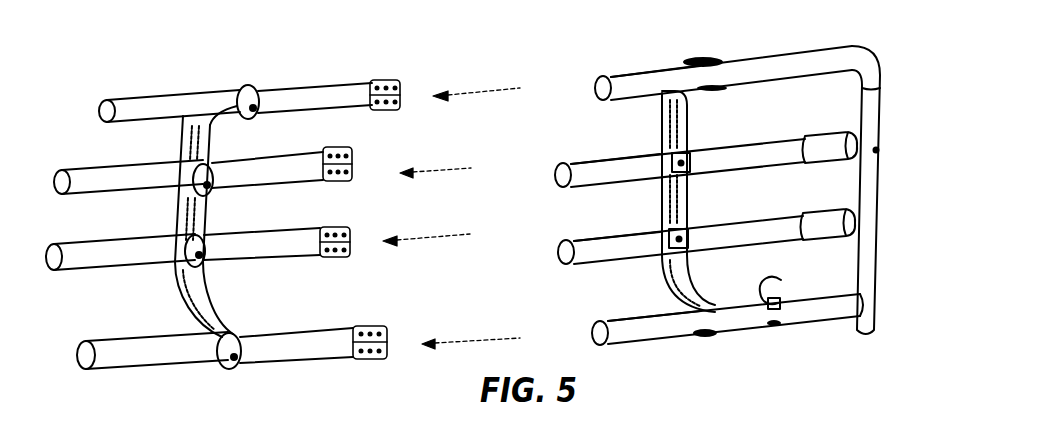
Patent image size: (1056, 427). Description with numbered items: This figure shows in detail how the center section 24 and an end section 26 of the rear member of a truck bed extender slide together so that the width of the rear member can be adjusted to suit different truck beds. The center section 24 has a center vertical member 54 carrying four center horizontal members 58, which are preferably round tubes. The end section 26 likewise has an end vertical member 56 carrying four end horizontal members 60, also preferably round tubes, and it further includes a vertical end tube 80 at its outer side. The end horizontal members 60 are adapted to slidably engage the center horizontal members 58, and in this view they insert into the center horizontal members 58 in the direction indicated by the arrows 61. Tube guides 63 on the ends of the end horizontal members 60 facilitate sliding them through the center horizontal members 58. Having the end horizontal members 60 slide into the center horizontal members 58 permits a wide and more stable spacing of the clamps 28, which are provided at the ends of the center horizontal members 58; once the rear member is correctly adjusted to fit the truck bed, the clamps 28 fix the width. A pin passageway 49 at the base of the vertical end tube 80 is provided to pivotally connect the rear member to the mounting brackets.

The center section 24 is at (90, 130).
The end section 26 is at (930, 80).
The clamp 28 is at (372, 83).
The pin passageway 49 is at (850, 323).
The center vertical member 54 is at (182, 206).
The end vertical member 56 is at (687, 213).
The center horizontal member 58 is at (277, 98).
The end horizontal member 60 is at (650, 80).
The arrow 61 is at (470, 90).
The tube guide 63 is at (600, 86).
The vertical end tube 80 is at (867, 193).